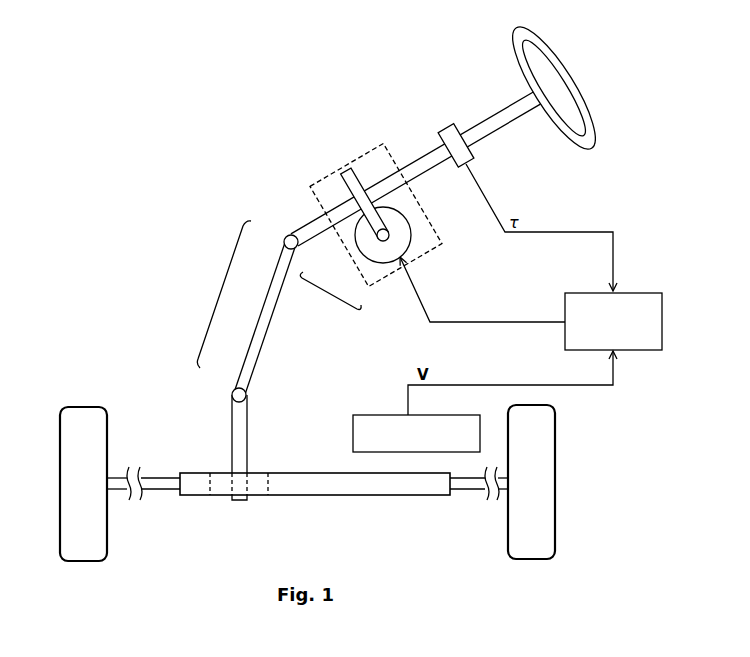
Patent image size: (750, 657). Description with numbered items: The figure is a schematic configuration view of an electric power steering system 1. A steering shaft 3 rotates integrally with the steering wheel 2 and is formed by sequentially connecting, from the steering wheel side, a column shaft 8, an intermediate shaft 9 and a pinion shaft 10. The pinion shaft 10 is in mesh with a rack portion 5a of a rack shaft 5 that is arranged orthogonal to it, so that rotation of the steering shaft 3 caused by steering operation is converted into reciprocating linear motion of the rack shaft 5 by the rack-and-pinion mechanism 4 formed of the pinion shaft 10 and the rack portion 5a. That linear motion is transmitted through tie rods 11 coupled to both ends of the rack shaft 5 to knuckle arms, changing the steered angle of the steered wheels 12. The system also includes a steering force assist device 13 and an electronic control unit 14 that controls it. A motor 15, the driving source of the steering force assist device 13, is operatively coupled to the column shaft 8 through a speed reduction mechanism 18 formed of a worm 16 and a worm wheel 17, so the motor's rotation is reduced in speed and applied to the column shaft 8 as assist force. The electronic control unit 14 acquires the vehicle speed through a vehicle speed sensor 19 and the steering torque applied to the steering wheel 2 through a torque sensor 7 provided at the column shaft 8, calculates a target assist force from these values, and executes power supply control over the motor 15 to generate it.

The electric power steering system 1 is at (663, 63).
The steering wheel 2 is at (588, 98).
The steering shaft 3 is at (221, 292).
The rack-and-pinion mechanism 4 is at (228, 471).
The rack shaft 5 is at (330, 472).
The rack portion 5a is at (268, 495).
The torque sensor 7 is at (447, 129).
The column shaft 8 is at (284, 237).
The intermediate shaft 9 is at (265, 300).
The pinion shaft 10 is at (232, 408).
The tie rods 11 is at (158, 477).
The steered wheels 12 is at (108, 423).
The steering force assist device 13 is at (355, 159).
The electronic control unit 14 is at (643, 351).
The motor 15 is at (410, 243).
The worm 16 is at (375, 246).
The worm wheel 17 is at (355, 238).
The speed reduction mechanism 18 is at (330, 297).
The vehicle speed sensor 19 is at (362, 415).